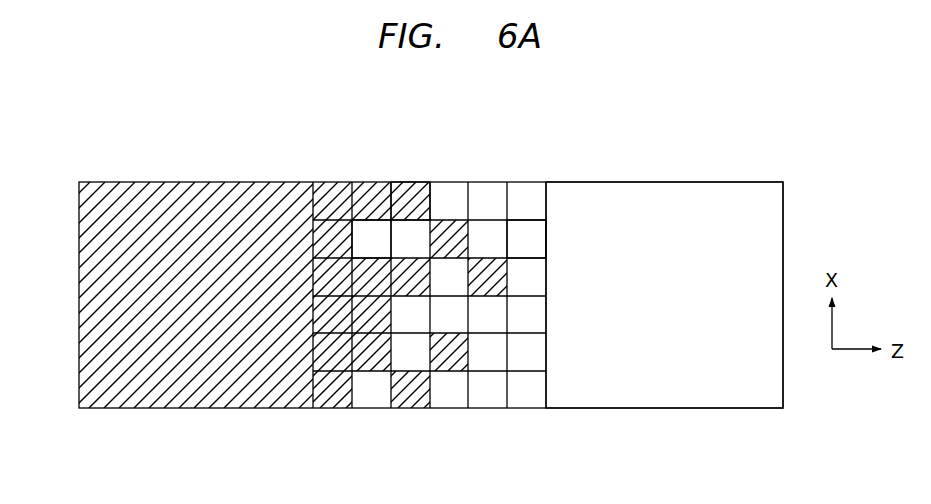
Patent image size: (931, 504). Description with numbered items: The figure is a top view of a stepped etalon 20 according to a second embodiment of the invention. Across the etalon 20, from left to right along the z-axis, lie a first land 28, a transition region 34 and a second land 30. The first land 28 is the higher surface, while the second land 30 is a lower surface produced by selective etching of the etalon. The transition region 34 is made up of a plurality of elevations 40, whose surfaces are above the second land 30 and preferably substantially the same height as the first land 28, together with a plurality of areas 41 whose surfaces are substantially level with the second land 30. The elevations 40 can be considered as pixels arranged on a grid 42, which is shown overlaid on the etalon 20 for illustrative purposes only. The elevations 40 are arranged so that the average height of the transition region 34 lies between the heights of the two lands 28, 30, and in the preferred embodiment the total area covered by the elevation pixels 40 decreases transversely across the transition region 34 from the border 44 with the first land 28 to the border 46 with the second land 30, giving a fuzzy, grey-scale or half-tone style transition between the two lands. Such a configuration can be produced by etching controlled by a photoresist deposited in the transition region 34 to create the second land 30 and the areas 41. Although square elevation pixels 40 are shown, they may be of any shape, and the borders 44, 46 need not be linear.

The etalon 20 is at (803, 229).
The first land 28 is at (97, 293).
The second land 30 is at (665, 370).
The transition region 34 is at (412, 418).
The elevations 40 is at (411, 203).
The areas 41 is at (373, 238).
The grid 42 is at (508, 240).
The border 44 is at (310, 388).
The border 46 is at (545, 388).